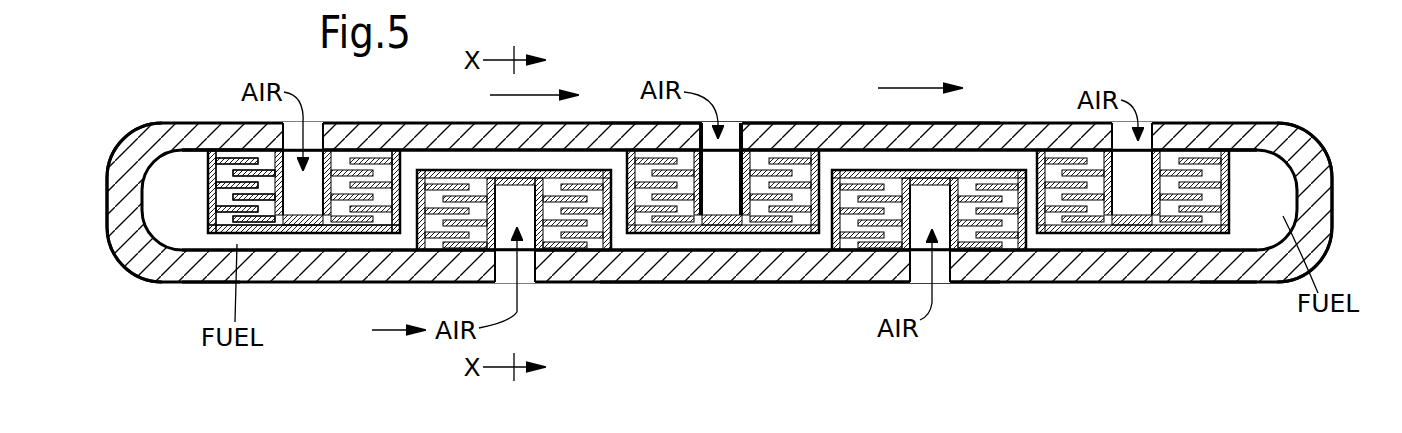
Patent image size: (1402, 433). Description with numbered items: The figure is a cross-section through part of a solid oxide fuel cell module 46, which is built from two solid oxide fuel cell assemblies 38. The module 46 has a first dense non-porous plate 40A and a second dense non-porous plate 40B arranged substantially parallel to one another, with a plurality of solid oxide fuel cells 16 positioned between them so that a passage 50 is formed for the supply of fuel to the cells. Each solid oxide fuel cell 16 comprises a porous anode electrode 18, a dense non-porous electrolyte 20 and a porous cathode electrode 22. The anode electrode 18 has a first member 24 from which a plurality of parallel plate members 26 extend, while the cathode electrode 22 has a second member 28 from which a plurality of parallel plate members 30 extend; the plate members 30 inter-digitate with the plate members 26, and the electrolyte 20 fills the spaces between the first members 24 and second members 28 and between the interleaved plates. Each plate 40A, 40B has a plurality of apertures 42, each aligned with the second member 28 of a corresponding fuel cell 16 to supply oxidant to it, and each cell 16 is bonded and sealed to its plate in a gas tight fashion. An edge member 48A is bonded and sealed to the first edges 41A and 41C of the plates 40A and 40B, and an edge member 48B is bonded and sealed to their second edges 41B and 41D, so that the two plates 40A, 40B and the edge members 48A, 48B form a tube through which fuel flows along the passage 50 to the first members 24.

The solid oxide fuel cell 16 is at (599, 166).
The porous anode electrode 18 is at (210, 171).
The dense non-porous electrolyte 20 is at (396, 160).
The porous cathode electrode 22 is at (303, 186).
The first member 24 is at (215, 207).
The parallel plate members 26 is at (271, 296).
The second member 28 is at (720, 182).
The parallel plate members 30 is at (254, 238).
The solid oxide fuel cell assembly 38 is at (811, 118).
The first dense non-porous plate 40A is at (948, 124).
The second dense non-porous plate 40B is at (606, 268).
The first edge 41A is at (212, 149).
The second edge 41B is at (1243, 140).
The first edge 41C is at (240, 243).
The second edge 41D is at (1247, 283).
The aperture 42 is at (325, 149).
The solid oxide fuel cell module 46 is at (1261, 121).
The edge member 48A is at (148, 124).
The edge member 48B is at (1333, 180).
The passage 50 is at (147, 185).